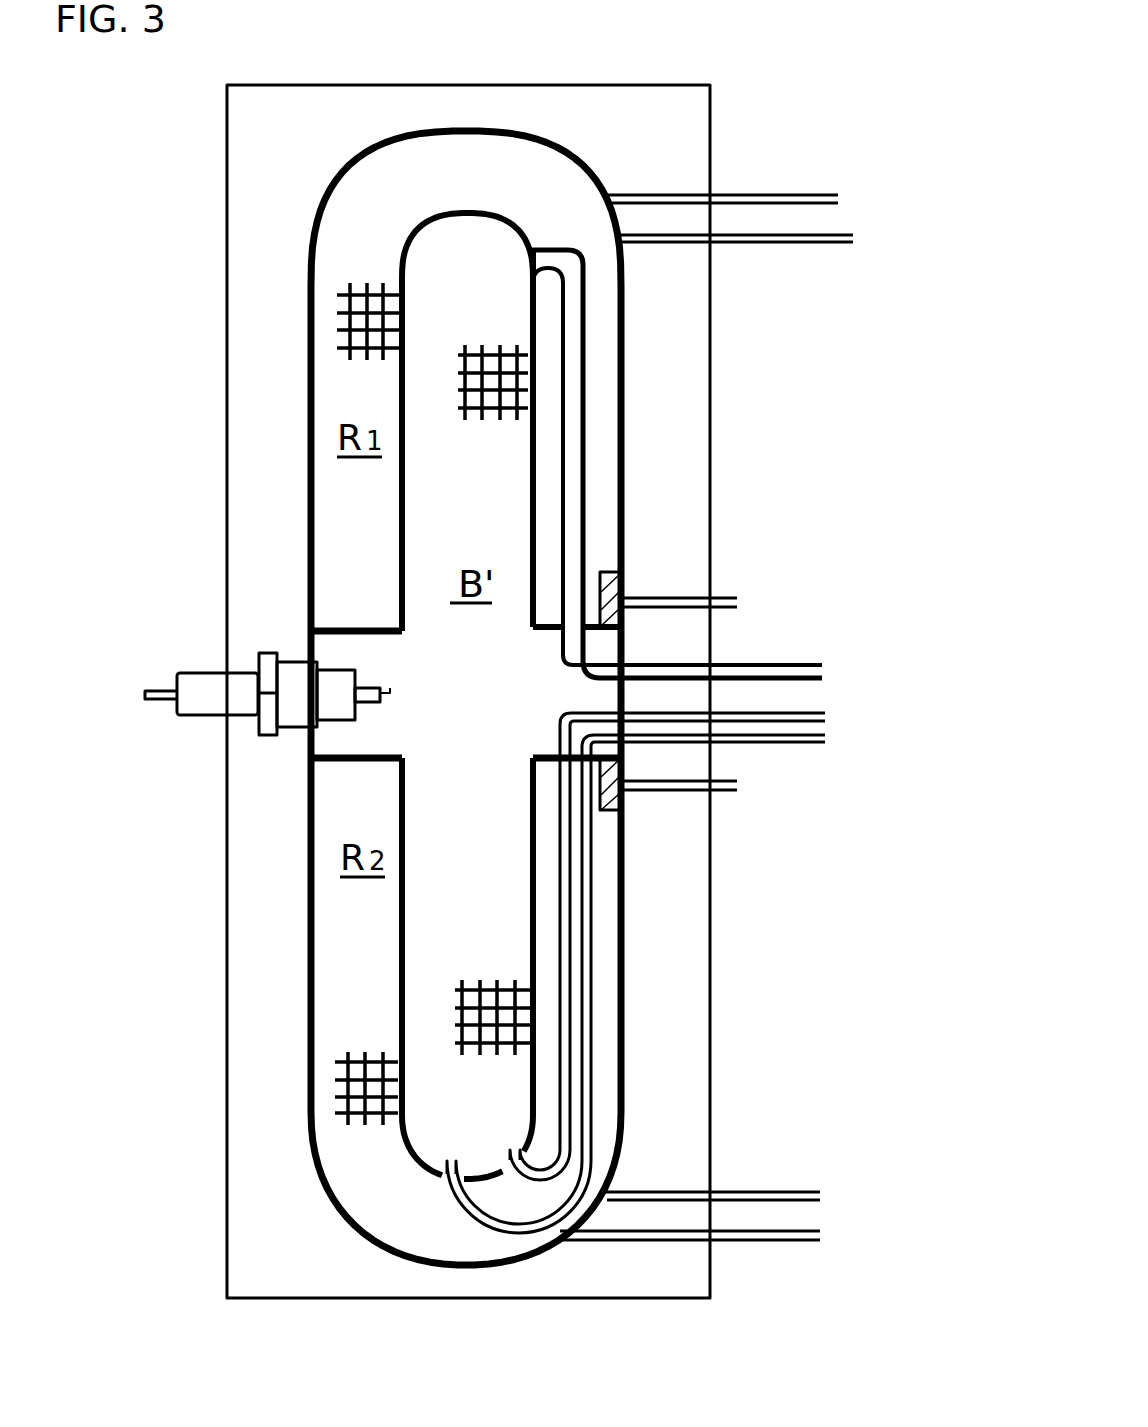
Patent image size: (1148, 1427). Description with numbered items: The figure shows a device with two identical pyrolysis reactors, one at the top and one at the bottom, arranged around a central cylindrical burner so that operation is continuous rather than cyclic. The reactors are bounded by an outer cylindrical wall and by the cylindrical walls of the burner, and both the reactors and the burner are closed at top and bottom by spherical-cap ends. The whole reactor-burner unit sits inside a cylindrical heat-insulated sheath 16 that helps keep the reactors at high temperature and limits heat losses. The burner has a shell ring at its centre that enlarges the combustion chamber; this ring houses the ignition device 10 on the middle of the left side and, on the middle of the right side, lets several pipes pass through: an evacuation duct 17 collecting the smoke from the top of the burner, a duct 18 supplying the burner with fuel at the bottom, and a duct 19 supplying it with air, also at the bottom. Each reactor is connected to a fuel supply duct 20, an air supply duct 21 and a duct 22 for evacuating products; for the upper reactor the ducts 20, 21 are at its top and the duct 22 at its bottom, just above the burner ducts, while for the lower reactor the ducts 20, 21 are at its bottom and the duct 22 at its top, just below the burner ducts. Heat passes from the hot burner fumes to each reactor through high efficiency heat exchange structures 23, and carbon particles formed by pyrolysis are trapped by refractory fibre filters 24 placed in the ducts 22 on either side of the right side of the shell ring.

The ignition device 10 is at (202, 668).
The heat-insulated sheath 16 is at (240, 147).
The evacuation duct 17 is at (822, 668).
The fuel supply duct 18 is at (787, 708).
The air supply duct 19 is at (772, 745).
The fuel supply duct 20 is at (793, 193).
The air supply duct 21 is at (798, 243).
The product evacuation duct 22 is at (740, 598).
The heat exchange structures 23 is at (482, 378).
The filters 24 is at (625, 572).